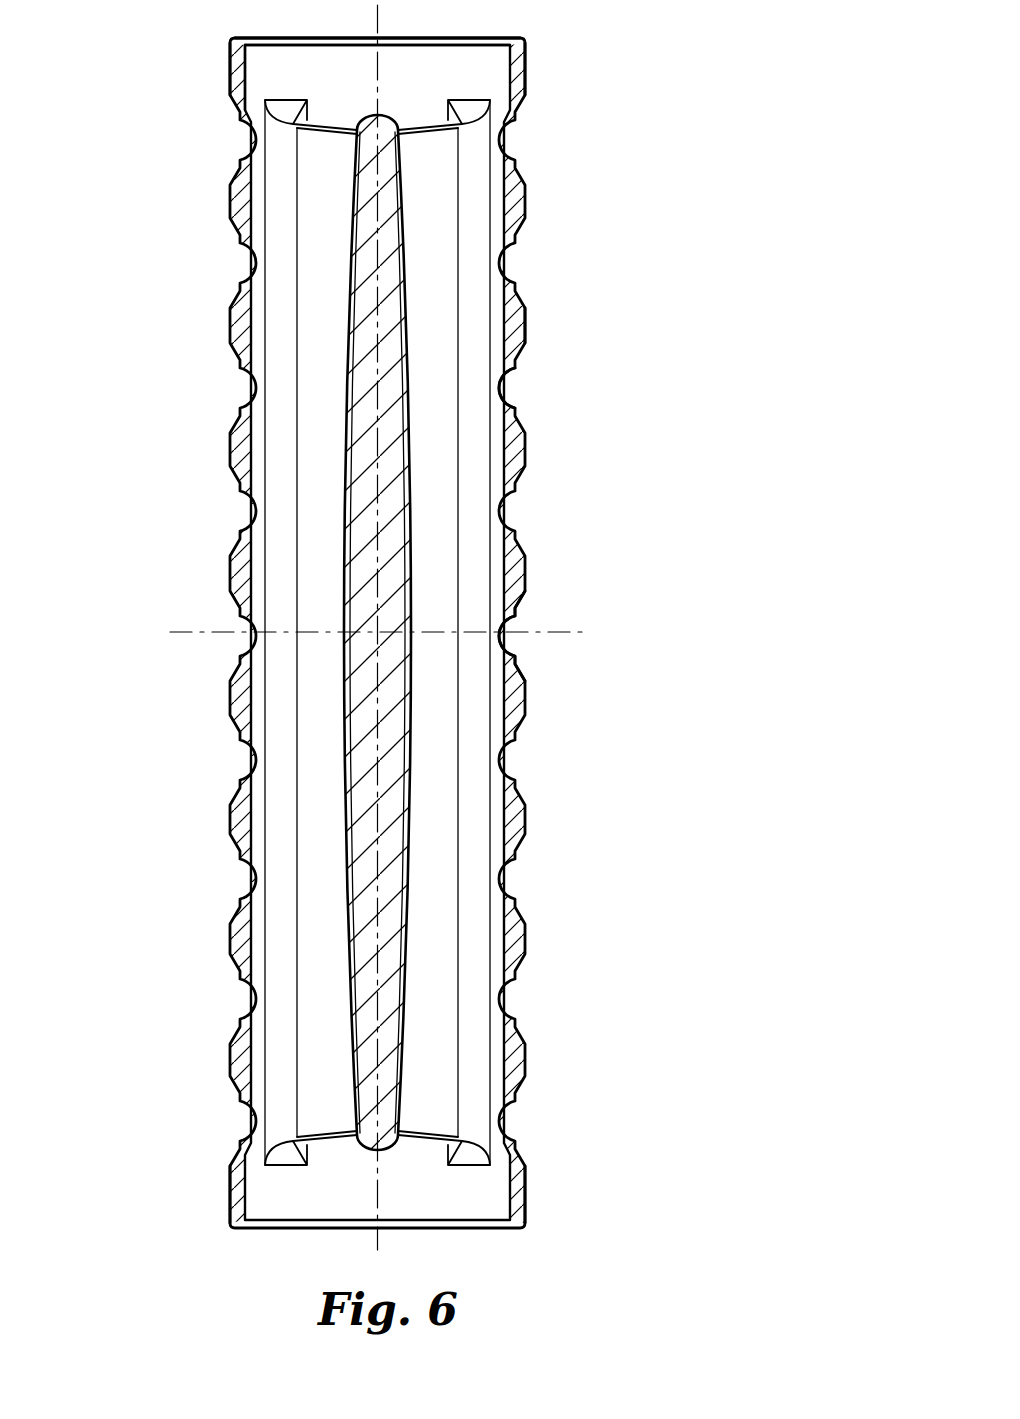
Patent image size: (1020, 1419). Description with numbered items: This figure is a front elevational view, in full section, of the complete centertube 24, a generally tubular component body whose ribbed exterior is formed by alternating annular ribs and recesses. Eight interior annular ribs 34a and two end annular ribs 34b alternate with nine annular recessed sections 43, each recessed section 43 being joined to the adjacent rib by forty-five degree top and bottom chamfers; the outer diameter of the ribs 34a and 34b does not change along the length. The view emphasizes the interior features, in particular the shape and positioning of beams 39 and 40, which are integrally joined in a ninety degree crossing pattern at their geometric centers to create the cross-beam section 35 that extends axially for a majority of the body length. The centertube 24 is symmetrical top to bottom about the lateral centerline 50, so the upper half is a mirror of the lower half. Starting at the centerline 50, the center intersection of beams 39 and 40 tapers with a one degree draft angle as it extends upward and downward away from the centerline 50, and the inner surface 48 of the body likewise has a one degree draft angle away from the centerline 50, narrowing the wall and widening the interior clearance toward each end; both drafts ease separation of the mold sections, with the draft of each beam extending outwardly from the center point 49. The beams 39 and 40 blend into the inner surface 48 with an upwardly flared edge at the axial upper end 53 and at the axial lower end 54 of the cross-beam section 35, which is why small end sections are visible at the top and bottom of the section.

The centertube 24 is at (567, 503).
The interior annular rib 34a is at (522, 328).
The end annular rib 34b is at (236, 72).
The cross-beam section 35 is at (355, 703).
The beam 39 is at (320, 205).
The beam 40 is at (430, 187).
The recessed section 43 is at (502, 388).
The inner surface 48 is at (255, 78).
The center point 49 is at (380, 68).
The lateral centerline 50 is at (526, 627).
The axial upper end 53 is at (422, 120).
The axial lower end 54 is at (325, 1147).